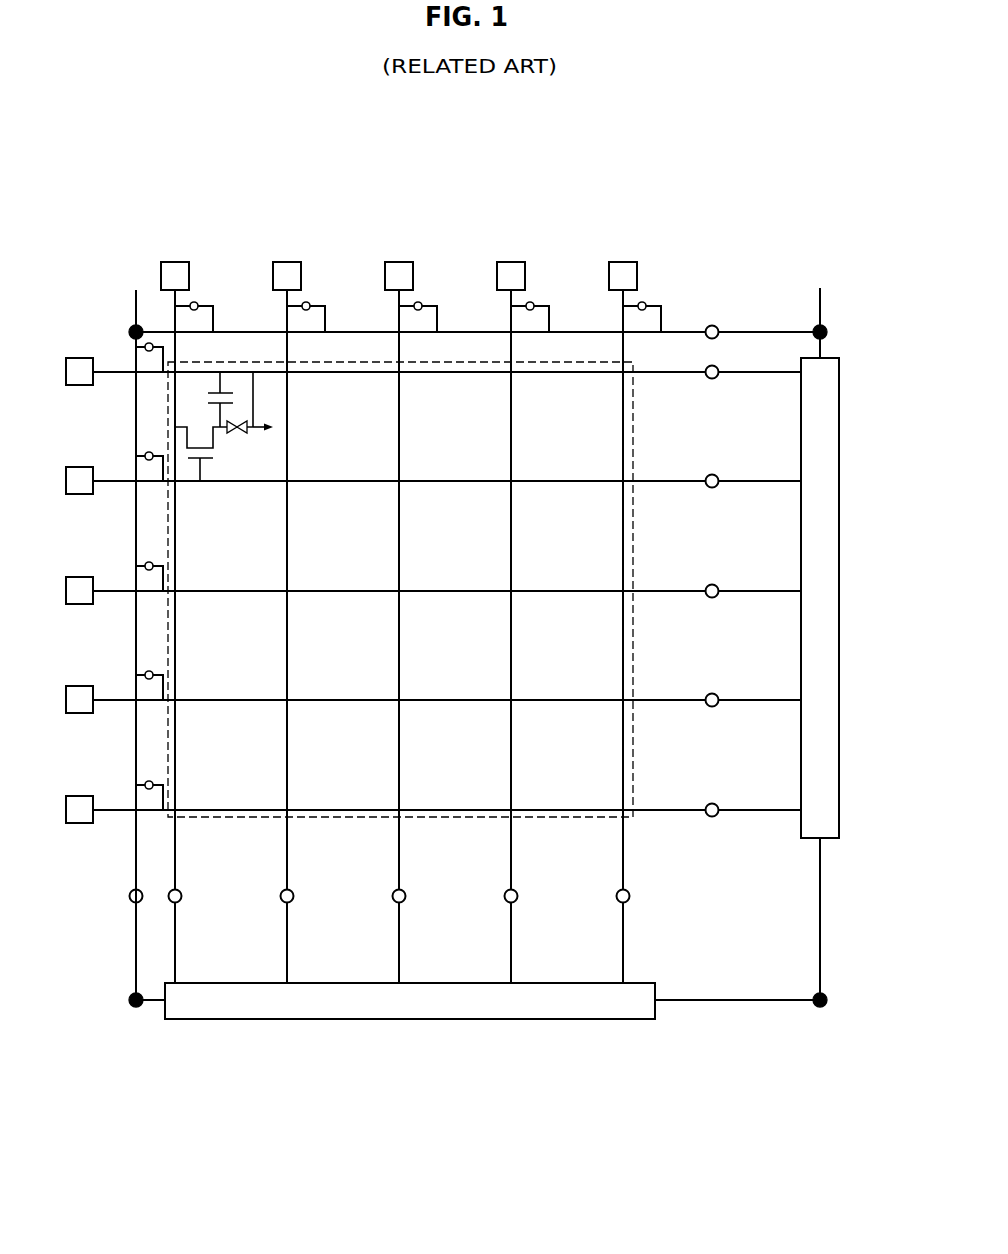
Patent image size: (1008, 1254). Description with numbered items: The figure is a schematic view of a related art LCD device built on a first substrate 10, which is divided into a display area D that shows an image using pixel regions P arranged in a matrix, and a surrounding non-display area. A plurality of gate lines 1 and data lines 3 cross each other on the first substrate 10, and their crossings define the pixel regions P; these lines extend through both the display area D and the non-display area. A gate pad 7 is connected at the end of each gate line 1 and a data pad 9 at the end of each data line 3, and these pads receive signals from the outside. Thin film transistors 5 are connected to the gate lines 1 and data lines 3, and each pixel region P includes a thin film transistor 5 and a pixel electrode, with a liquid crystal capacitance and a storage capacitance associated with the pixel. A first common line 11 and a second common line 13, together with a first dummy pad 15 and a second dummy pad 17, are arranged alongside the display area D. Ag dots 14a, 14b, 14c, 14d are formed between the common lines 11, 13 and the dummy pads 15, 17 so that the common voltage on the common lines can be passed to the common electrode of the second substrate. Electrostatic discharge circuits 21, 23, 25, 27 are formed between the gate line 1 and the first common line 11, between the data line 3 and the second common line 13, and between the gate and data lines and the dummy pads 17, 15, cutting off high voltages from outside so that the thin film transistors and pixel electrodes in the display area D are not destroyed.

The first substrate 10 is at (161, 128).
The gate line 1 is at (115, 373).
The data line 3 is at (175, 854).
The thin film transistor 5 is at (233, 488).
The gate pad 7 is at (80, 357).
The data pad 9 is at (623, 268).
The first common line 11 is at (136, 518).
The second common line 13 is at (687, 330).
The Ag dot 14a is at (133, 331).
The Ag dot 14b is at (827, 332).
The Ag dot 14c is at (136, 1007).
The Ag dot 14d is at (820, 1007).
The first dummy pad 15 is at (389, 1020).
The second dummy pad 17 is at (827, 505).
The electrostatic discharge circuit 21 is at (149, 562).
The electrostatic discharge circuit 23 is at (418, 302).
The electrostatic discharge circuit 25 is at (630, 896).
The electrostatic discharge circuit 27 is at (712, 598).
The pixel region P is at (607, 538).
The display area D is at (633, 743).